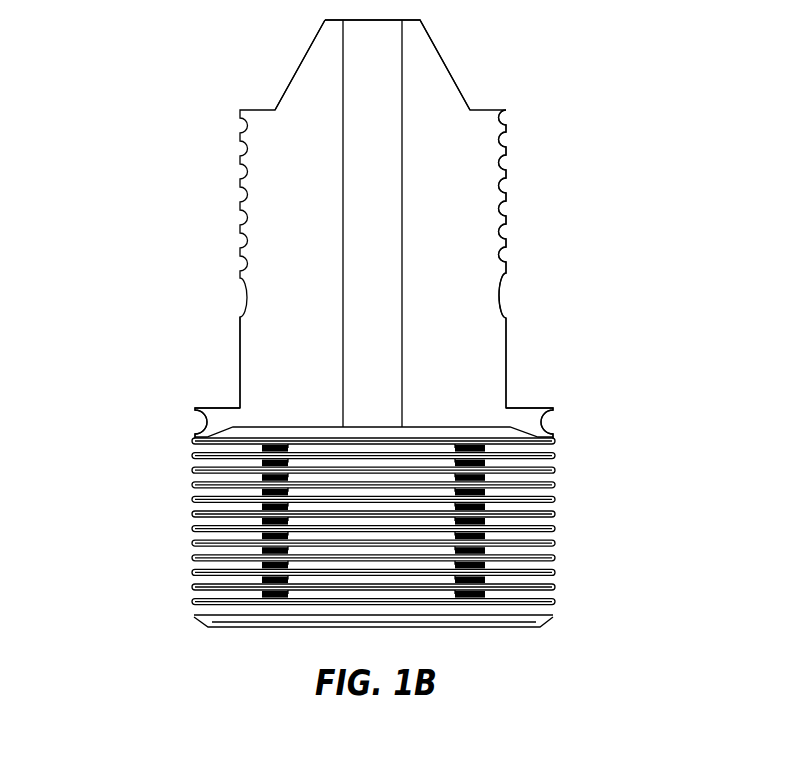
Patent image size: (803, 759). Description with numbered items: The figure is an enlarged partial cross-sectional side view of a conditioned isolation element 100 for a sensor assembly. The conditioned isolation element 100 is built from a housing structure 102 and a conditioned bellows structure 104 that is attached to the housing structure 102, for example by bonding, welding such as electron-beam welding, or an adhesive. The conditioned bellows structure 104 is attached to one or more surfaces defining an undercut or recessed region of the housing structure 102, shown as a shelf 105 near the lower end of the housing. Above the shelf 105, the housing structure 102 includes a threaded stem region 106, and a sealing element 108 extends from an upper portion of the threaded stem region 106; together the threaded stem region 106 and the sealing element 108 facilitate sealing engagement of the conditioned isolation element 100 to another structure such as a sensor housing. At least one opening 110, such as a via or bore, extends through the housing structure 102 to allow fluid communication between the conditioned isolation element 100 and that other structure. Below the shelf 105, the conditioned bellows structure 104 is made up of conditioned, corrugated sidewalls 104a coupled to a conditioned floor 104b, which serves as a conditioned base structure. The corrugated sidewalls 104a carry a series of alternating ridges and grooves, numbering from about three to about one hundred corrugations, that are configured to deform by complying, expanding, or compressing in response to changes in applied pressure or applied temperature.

The conditioned isolation element 100 is at (178, 231).
The housing structure 102 is at (275, 391).
The conditioned bellows structure 104 is at (468, 532).
The conditioned, corrugated sidewalls 104a is at (552, 497).
The conditioned floor 104b is at (505, 613).
The shelf 105 is at (559, 411).
The threaded stem region 106 is at (519, 271).
The sealing element 108 is at (424, 63).
The opening 110 is at (362, 83).